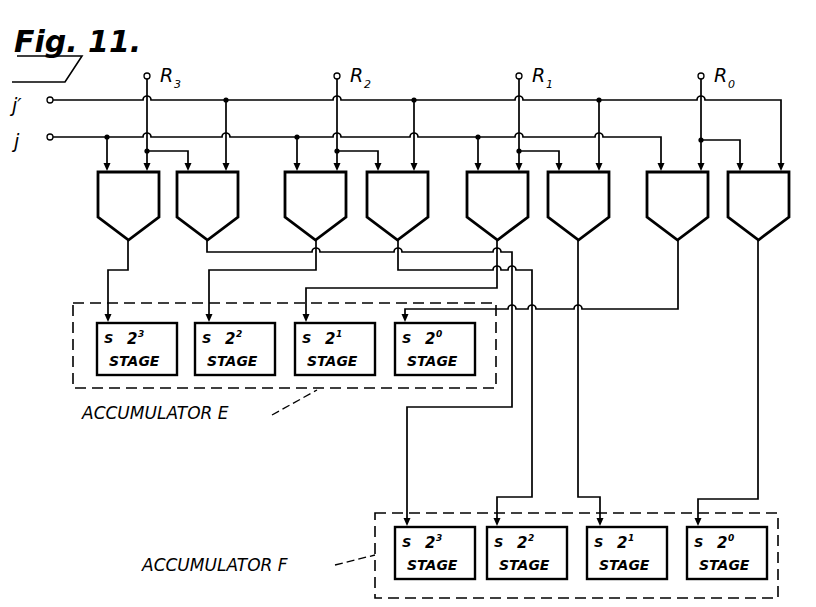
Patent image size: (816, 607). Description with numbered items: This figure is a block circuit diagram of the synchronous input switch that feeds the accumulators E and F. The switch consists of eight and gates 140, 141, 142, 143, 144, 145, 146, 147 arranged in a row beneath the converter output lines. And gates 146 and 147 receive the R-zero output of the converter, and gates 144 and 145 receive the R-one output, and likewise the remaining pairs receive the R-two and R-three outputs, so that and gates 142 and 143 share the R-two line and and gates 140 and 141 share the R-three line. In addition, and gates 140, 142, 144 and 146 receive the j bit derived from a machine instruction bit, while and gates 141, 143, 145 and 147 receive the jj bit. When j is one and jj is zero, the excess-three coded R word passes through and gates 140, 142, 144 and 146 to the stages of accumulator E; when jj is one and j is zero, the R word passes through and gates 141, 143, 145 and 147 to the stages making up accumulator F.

The and gate 140 is at (97, 221).
The and gate 141 is at (193, 236).
The and gate 142 is at (289, 221).
The and gate 143 is at (380, 229).
The and gate 144 is at (478, 225).
The and gate 145 is at (565, 229).
The and gate 146 is at (661, 235).
The and gate 147 is at (748, 236).